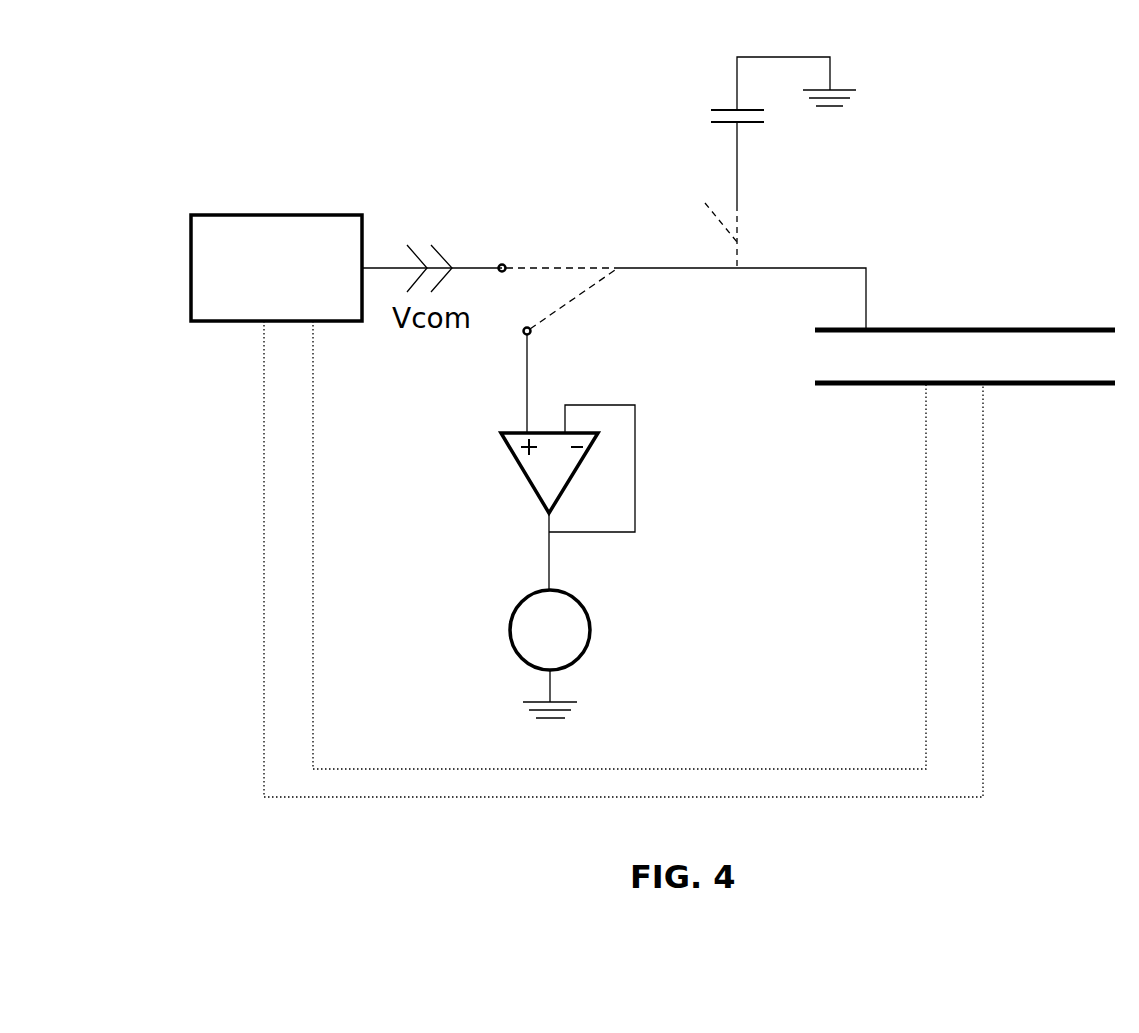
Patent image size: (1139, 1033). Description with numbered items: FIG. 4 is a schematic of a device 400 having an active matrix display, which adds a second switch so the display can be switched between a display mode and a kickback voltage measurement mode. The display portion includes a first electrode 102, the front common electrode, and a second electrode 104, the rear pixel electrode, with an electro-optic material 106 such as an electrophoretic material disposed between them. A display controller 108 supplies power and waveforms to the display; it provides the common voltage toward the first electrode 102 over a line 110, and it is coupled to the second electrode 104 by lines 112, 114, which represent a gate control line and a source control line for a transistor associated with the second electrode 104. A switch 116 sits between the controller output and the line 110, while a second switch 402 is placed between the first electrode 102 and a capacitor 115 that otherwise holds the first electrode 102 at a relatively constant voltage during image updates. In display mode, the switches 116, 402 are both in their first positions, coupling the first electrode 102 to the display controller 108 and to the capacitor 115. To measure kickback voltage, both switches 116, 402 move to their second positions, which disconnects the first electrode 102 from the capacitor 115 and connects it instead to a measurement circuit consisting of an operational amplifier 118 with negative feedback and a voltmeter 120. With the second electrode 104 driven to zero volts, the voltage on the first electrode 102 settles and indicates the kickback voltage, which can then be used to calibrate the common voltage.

The device 400 is at (294, 156).
The display controller 108 is at (276, 268).
The switch 116 is at (535, 262).
The line 110 is at (761, 282).
The second switch 402 is at (716, 202).
The capacitor 115 is at (704, 108).
The first electrode 102 is at (1037, 328).
The second electrode 104 is at (1058, 386).
The electro-optic material 106 is at (895, 355).
The line 112 is at (599, 559).
The line 114 is at (619, 545).
The operational amplifier 118 is at (541, 462).
The voltmeter 120 is at (581, 654).